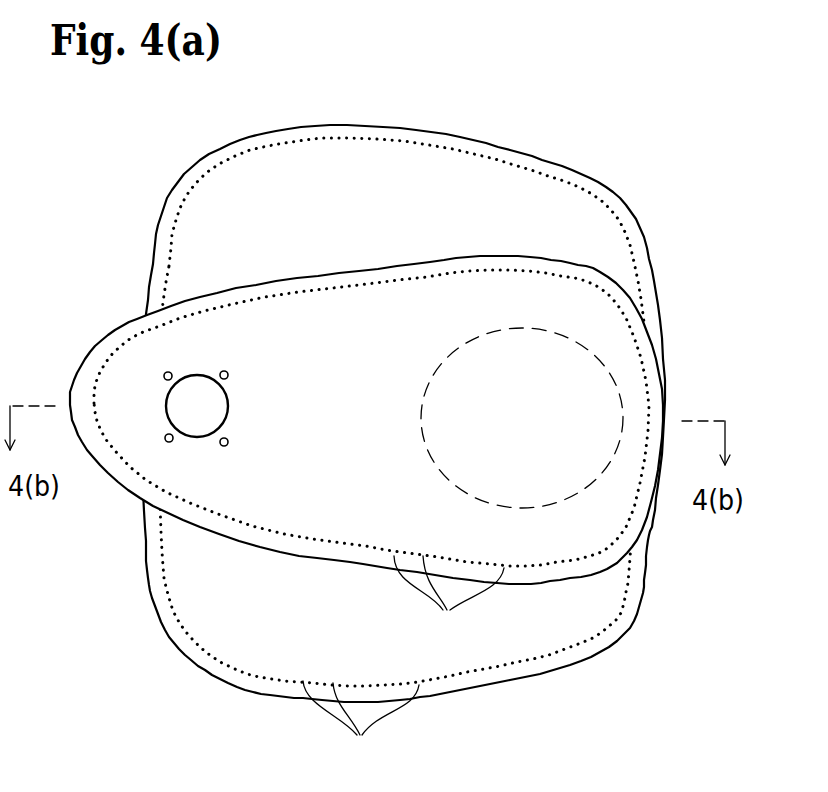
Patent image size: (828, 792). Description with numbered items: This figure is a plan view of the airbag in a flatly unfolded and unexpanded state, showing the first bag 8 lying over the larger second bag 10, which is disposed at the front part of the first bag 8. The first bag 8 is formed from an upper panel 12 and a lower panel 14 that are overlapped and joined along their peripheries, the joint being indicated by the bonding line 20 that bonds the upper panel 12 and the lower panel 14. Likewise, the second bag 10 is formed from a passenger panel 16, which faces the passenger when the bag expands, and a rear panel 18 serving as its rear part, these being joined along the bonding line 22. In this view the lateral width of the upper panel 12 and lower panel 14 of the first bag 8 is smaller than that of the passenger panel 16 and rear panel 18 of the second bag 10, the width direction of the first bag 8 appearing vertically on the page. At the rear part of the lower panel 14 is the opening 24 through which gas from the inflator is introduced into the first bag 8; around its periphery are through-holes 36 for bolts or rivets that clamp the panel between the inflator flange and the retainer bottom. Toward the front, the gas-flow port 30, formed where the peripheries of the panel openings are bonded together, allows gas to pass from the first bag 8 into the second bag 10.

The first bag 8 is at (400, 449).
The second bag 10 is at (403, 410).
The upper panel 12 is at (257, 548).
The lower panel 14 is at (327, 505).
The passenger panel 16 is at (405, 128).
The rear panel 18 is at (328, 185).
The bonding line 20 is at (449, 600).
The bonding line 22 is at (361, 726).
The opening 24 is at (230, 406).
The gas-flow port 30 is at (552, 385).
The through-holes 36 is at (227, 371).